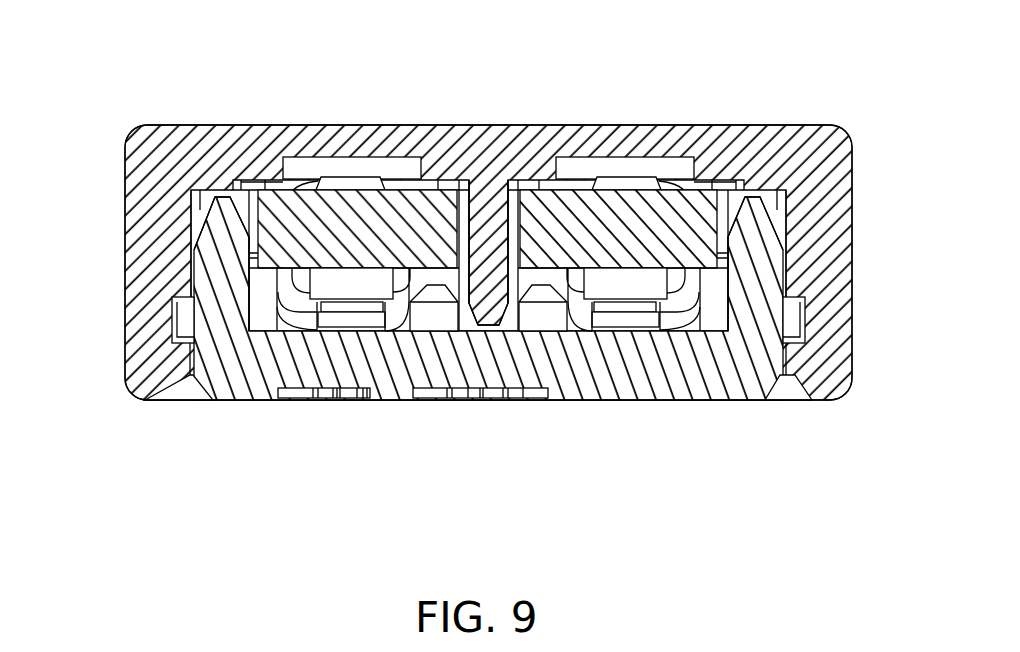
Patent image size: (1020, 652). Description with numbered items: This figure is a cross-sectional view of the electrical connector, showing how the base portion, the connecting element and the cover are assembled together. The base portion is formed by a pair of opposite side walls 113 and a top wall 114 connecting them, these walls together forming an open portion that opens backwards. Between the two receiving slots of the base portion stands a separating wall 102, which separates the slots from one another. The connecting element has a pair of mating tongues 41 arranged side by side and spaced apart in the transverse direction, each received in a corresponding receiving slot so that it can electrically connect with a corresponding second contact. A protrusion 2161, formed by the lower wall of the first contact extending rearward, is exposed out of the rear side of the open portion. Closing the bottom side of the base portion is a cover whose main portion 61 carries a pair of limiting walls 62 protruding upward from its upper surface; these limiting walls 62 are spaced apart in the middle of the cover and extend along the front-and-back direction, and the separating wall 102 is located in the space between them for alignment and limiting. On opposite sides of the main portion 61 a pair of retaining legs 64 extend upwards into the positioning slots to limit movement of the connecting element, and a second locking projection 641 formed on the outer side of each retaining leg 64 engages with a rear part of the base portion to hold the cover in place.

The side wall 113 is at (148, 258).
The top wall 114 is at (296, 135).
The separating wall 102 is at (488, 210).
The mating tongue 41 is at (353, 212).
The retaining leg 64 is at (215, 237).
The second locking projection 641 is at (178, 327).
The main portion 61 is at (695, 375).
The limiting wall 62 is at (435, 318).
The protrusion 2161 is at (344, 318).